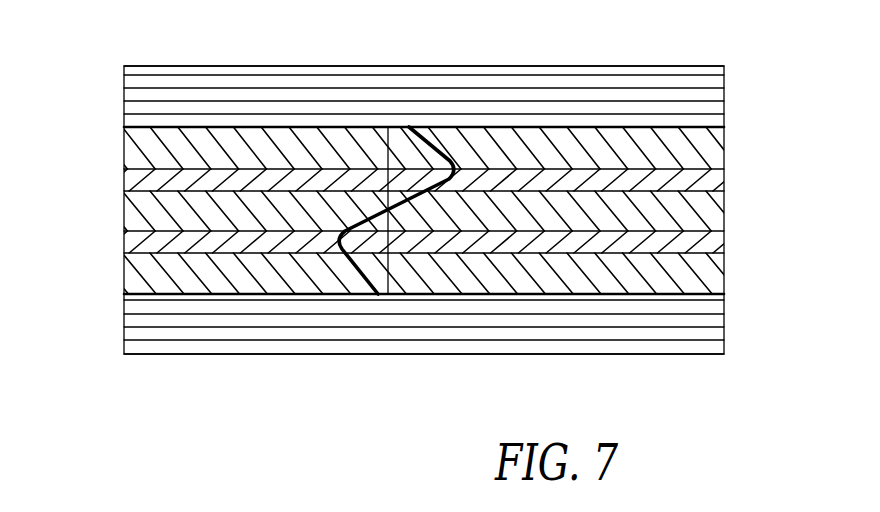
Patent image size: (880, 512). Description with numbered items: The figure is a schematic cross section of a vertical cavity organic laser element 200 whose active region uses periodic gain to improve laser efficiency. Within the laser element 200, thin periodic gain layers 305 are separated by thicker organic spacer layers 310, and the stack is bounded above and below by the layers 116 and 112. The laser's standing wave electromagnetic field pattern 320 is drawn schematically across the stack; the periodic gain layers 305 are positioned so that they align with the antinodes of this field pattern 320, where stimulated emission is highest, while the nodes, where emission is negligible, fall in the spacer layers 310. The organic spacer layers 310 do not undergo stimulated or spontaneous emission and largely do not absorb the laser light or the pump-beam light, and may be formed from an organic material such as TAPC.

The lower substrate 112 is at (724, 328).
The upper substrate 116 is at (724, 77).
The laser element 200 is at (430, 224).
The periodic gain layer 305 is at (724, 172).
The organic spacer layer 310 is at (123, 168).
The standing wave electromagnetic field pattern 320 is at (357, 272).